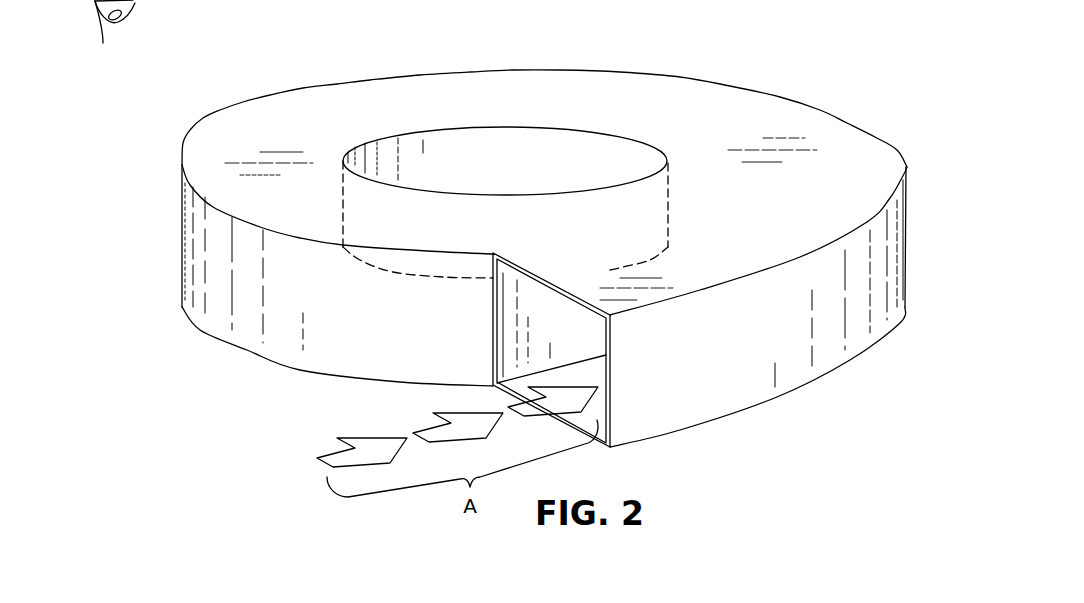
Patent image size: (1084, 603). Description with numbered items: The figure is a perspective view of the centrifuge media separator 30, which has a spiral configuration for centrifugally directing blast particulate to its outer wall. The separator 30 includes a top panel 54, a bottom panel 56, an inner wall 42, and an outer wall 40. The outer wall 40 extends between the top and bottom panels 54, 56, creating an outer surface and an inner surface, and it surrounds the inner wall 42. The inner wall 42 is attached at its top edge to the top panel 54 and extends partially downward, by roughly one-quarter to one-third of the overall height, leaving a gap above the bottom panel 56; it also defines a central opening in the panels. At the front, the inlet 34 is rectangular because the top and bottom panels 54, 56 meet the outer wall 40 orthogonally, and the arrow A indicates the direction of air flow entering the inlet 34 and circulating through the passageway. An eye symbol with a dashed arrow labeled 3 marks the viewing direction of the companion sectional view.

The centrifuge media separator 30 is at (818, 76).
The inner wall 42 is at (523, 150).
The top panel 54 is at (706, 241).
The outer wall 40 is at (679, 378).
The bottom panel 56 is at (777, 397).
The inlet 34 is at (578, 348).
The viewing direction of FIG. 3 is at (125, 22).